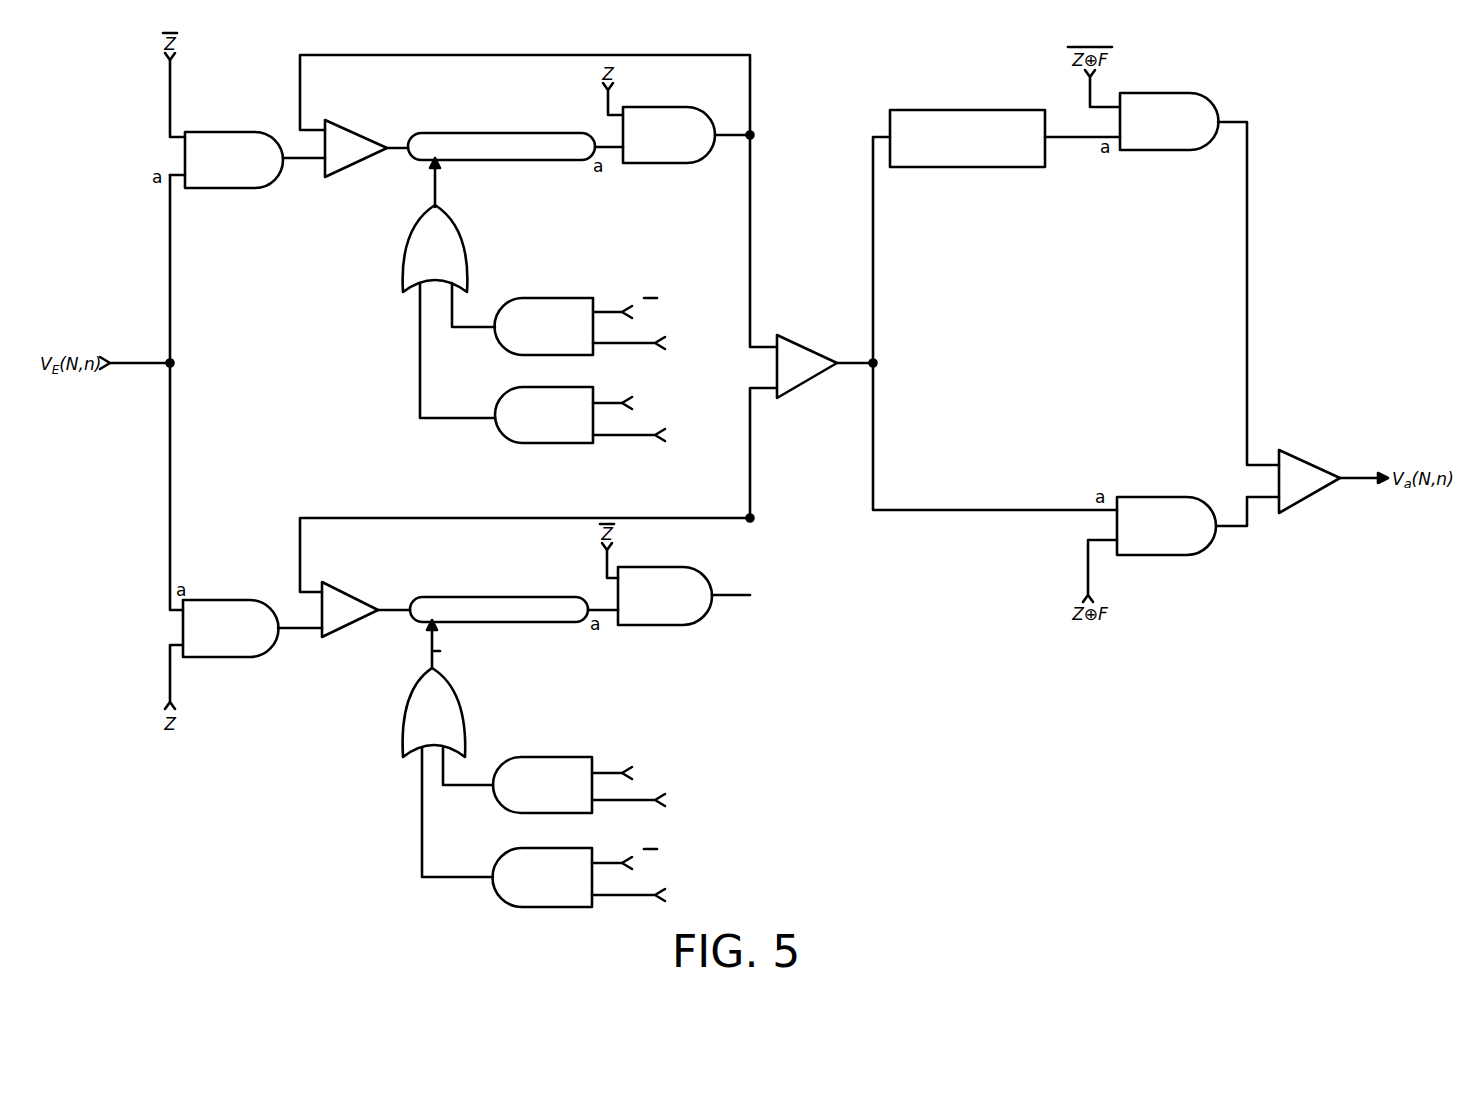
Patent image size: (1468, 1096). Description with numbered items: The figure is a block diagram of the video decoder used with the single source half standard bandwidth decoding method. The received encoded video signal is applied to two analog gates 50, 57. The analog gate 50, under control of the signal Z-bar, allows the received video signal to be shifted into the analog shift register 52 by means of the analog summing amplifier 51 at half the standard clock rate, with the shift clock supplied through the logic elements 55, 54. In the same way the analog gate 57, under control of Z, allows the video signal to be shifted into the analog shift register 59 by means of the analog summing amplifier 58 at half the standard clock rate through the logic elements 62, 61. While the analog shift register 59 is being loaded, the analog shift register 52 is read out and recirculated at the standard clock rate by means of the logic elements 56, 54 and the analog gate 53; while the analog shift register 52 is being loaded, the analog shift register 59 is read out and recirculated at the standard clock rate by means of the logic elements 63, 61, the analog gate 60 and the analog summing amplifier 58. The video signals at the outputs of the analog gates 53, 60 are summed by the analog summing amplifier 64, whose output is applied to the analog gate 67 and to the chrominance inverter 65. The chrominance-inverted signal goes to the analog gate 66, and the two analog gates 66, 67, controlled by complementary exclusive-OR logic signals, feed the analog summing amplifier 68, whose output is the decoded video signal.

The analog gate 50 is at (220, 188).
The analog summing amplifier 51 is at (338, 168).
The analog shift register 52 is at (533, 160).
The analog gate 53 is at (665, 163).
The logic element 54 is at (423, 263).
The logic element 55 is at (536, 339).
The logic element 56 is at (536, 428).
The analog gate 57 is at (215, 657).
The analog summing amplifier 58 is at (335, 630).
The analog shift register 59 is at (530, 622).
The analog gate 60 is at (680, 625).
The logic element 61 is at (421, 727).
The logic element 62 is at (535, 798).
The logic element 63 is at (535, 889).
The analog summing amplifier 64 is at (797, 345).
The chrominance inverter 65 is at (985, 167).
The analog gate 66 is at (1200, 93).
The analog gate 67 is at (1170, 555).
The analog summing amplifier 68 is at (1303, 505).